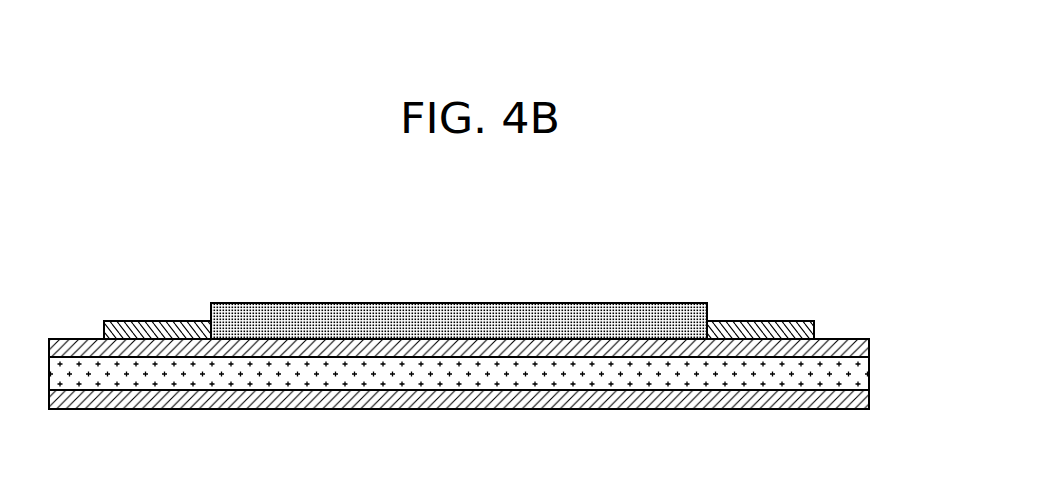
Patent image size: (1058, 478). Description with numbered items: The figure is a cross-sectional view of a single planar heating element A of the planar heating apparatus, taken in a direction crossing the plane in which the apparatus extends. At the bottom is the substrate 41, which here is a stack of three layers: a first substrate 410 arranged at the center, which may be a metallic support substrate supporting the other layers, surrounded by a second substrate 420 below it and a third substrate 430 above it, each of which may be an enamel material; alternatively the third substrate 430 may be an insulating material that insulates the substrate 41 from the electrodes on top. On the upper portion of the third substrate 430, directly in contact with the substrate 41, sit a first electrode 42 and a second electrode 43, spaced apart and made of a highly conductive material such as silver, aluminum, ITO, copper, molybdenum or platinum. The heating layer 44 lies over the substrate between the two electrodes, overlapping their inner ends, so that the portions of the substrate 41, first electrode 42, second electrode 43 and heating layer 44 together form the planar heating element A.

The substrate 41 is at (848, 333).
The first electrode 42 is at (165, 323).
The second electrode 43 is at (745, 323).
The heating layer 44 is at (300, 322).
The first substrate 410 is at (857, 376).
The second substrate 420 is at (868, 403).
The third substrate 430 is at (868, 350).
The planar heating element A is at (558, 272).